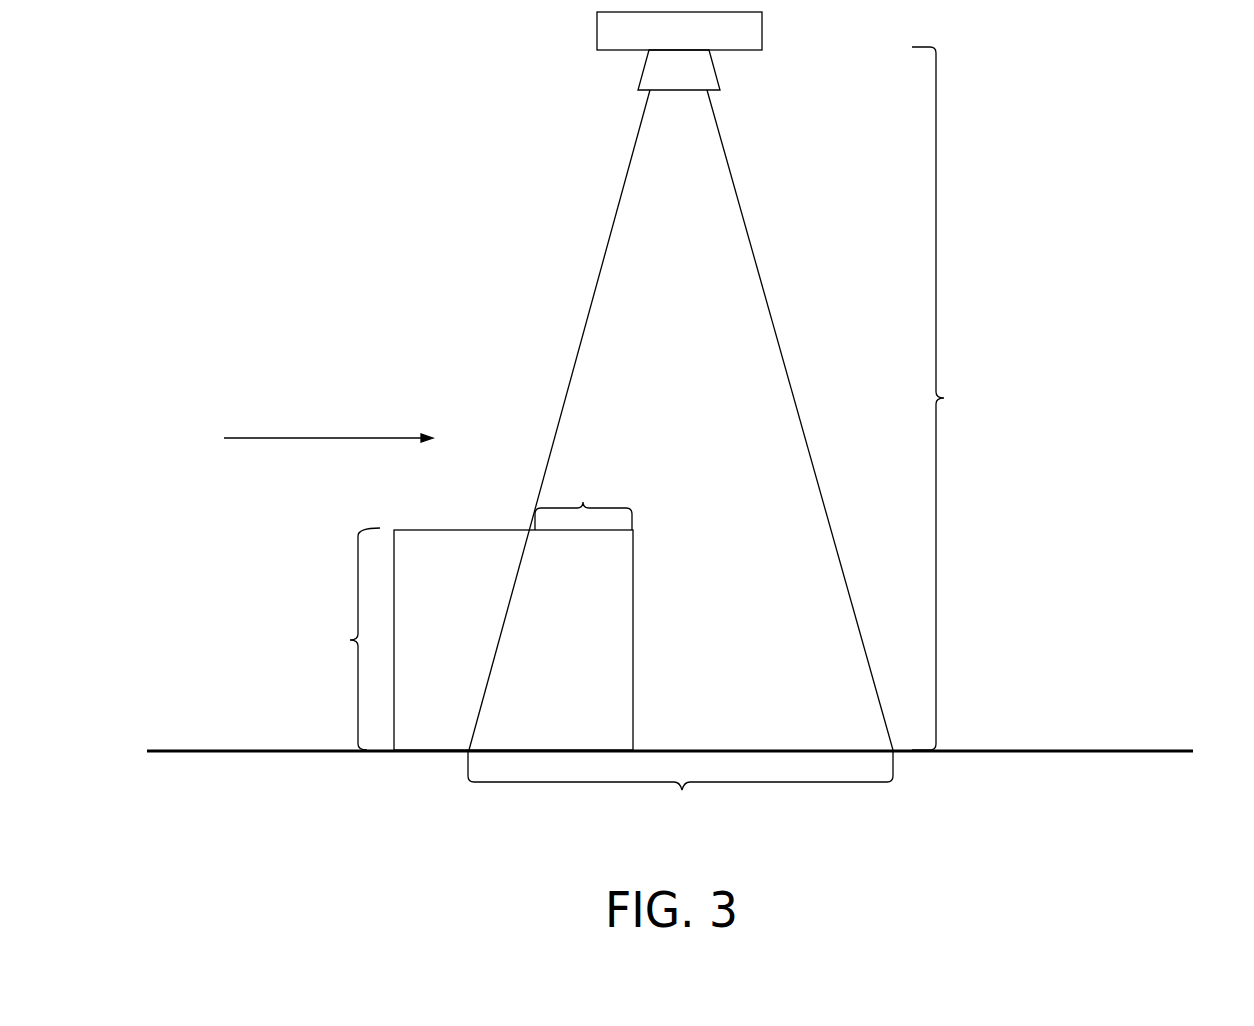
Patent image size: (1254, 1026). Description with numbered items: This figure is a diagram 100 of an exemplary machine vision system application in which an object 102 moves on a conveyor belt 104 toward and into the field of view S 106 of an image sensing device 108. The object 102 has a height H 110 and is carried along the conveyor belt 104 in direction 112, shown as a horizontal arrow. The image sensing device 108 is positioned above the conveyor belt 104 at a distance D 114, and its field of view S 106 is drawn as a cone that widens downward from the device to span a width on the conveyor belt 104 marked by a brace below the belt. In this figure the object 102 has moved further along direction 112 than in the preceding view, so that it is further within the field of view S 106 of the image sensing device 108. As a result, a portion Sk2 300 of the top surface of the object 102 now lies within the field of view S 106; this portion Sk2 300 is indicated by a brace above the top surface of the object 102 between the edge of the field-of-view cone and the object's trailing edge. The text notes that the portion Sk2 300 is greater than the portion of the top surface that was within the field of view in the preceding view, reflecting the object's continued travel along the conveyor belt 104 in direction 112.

The diagram 100 is at (226, 97).
The object 102 is at (513, 640).
The conveyor belt 104 is at (1113, 750).
The field of view S 106 is at (682, 790).
The image sensing device 108 is at (681, 381).
The height H 110 is at (350, 640).
The direction 112 is at (360, 436).
The distance D 114 is at (944, 398).
The portion Sk2 300 is at (583, 502).